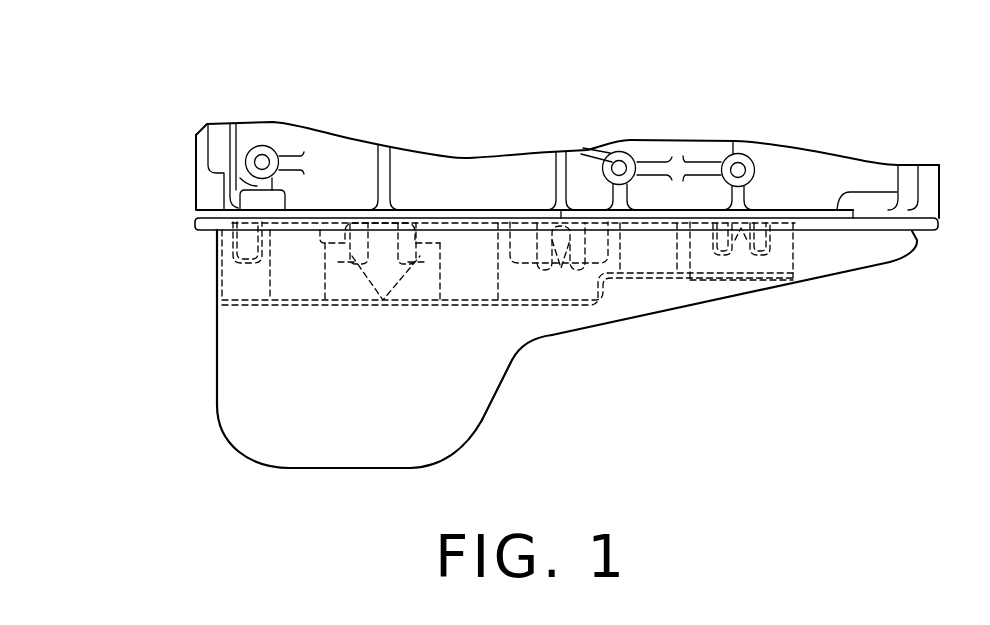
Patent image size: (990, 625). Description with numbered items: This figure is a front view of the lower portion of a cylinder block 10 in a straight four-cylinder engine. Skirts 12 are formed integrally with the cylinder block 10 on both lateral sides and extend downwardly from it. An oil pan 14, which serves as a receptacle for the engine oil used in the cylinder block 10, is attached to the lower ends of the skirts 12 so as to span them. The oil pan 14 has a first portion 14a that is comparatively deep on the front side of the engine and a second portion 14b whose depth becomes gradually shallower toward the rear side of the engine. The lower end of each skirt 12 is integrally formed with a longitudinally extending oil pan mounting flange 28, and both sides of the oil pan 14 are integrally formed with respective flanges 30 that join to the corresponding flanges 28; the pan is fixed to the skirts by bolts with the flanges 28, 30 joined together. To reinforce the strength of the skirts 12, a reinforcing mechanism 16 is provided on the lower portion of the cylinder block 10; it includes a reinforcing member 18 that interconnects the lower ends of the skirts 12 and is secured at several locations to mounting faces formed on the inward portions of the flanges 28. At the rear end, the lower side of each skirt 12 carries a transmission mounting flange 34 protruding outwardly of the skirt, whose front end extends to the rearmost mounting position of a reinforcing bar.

The cylinder block 10 is at (464, 128).
The skirt 12 is at (188, 185).
The oil pan 14 is at (541, 341).
The first portion 14a is at (490, 400).
The second portion 14b is at (750, 297).
The reinforcing mechanism 16 is at (614, 311).
The reinforcing member 18 is at (450, 302).
The oil pan mounting flange 28 is at (470, 210).
The flange 30 is at (194, 225).
The transmission mounting flange 34 is at (902, 214).